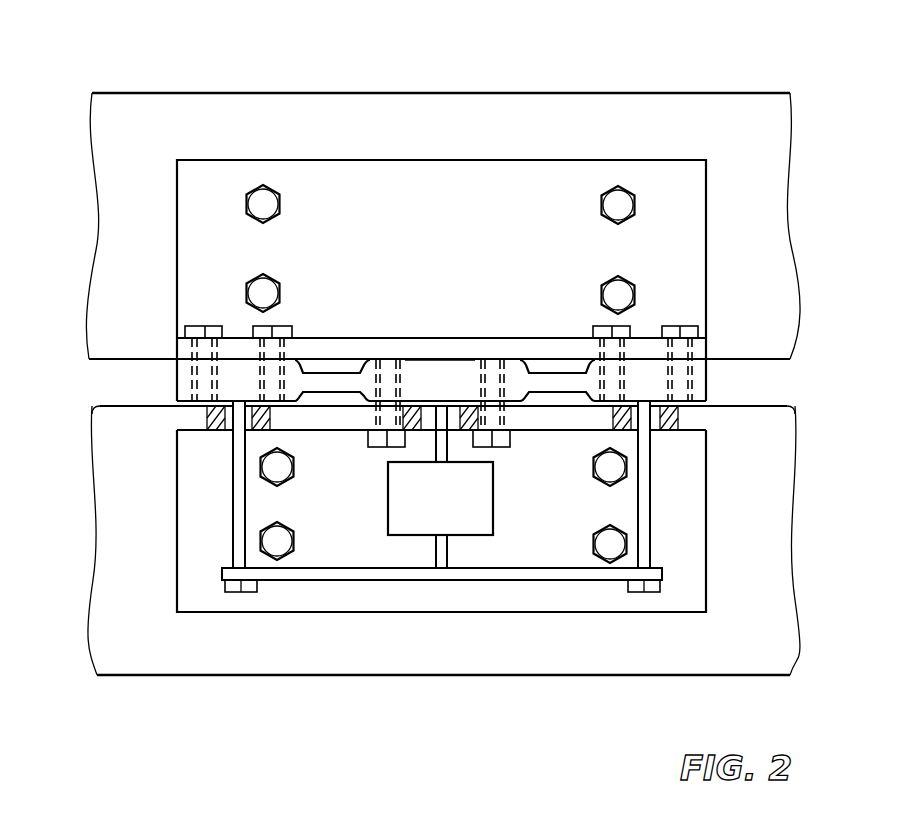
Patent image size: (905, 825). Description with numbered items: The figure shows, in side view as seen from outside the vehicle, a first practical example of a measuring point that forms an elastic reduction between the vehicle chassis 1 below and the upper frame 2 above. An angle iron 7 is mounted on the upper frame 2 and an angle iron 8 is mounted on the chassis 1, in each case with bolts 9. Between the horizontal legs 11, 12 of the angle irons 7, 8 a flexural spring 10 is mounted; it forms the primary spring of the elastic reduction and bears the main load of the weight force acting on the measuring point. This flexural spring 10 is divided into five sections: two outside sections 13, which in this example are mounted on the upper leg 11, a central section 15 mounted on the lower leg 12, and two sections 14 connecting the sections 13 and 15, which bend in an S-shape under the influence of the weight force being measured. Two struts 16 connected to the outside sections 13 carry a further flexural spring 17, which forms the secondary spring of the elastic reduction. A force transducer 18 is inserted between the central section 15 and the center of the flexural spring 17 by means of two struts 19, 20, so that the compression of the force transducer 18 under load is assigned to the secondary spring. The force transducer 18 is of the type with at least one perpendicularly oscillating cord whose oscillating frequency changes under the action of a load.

The chassis 1 is at (773, 660).
The upper frame 2 is at (645, 107).
The angle iron 7 is at (683, 182).
The angle iron 8 is at (692, 575).
The bolts 9 is at (262, 293).
The flexural spring 10 is at (372, 381).
The upper leg 11 is at (643, 353).
The lower leg 12 is at (692, 423).
The outside sections 13 is at (237, 387).
The connecting sections 14 is at (323, 390).
The central section 15 is at (455, 384).
The struts 16 is at (238, 552).
The flexural spring 17 is at (568, 577).
The force transducer 18 is at (442, 505).
The strut 19 is at (442, 447).
The strut 20 is at (440, 557).